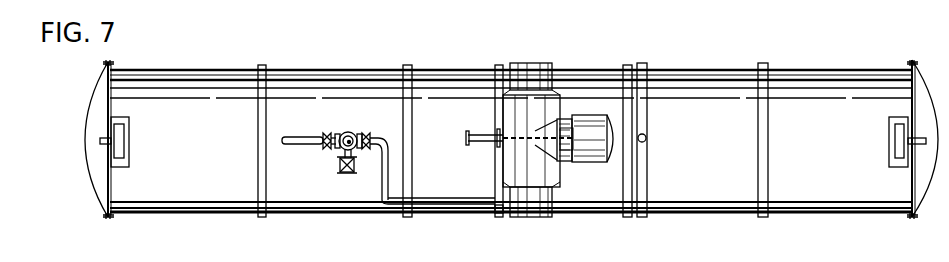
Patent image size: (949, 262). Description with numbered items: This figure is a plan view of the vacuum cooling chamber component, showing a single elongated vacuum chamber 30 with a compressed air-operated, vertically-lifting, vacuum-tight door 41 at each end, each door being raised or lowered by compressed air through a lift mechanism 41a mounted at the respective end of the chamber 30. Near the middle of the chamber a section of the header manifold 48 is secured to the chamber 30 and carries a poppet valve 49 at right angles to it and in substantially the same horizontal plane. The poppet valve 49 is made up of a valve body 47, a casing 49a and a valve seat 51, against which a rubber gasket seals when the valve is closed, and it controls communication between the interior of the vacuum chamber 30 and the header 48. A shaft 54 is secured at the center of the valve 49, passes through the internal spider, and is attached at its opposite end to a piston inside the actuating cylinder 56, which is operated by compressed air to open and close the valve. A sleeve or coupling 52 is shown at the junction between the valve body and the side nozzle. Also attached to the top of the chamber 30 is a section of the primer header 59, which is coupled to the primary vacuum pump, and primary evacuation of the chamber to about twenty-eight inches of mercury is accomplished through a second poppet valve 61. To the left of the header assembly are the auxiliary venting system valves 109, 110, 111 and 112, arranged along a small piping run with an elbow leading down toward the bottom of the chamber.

The vacuum chamber 30 is at (206, 212).
The vertically-lifting door 41 is at (86, 163).
The lift mechanism 41a is at (127, 138).
The valve body 47 is at (527, 174).
The header manifold 48 is at (520, 78).
The poppet valve 49 is at (567, 136).
The casing 49a is at (603, 162).
The valve seat 51 is at (566, 117).
The coupling sleeve 52 is at (572, 150).
The shaft 54 is at (540, 136).
The actuating cylinder 56 is at (484, 147).
The primer header 59 is at (641, 120).
The poppet valve 61 is at (647, 138).
The valve 109 is at (346, 131).
The valve 110 is at (324, 134).
The valve 111 is at (347, 174).
The valve 112 is at (372, 134).